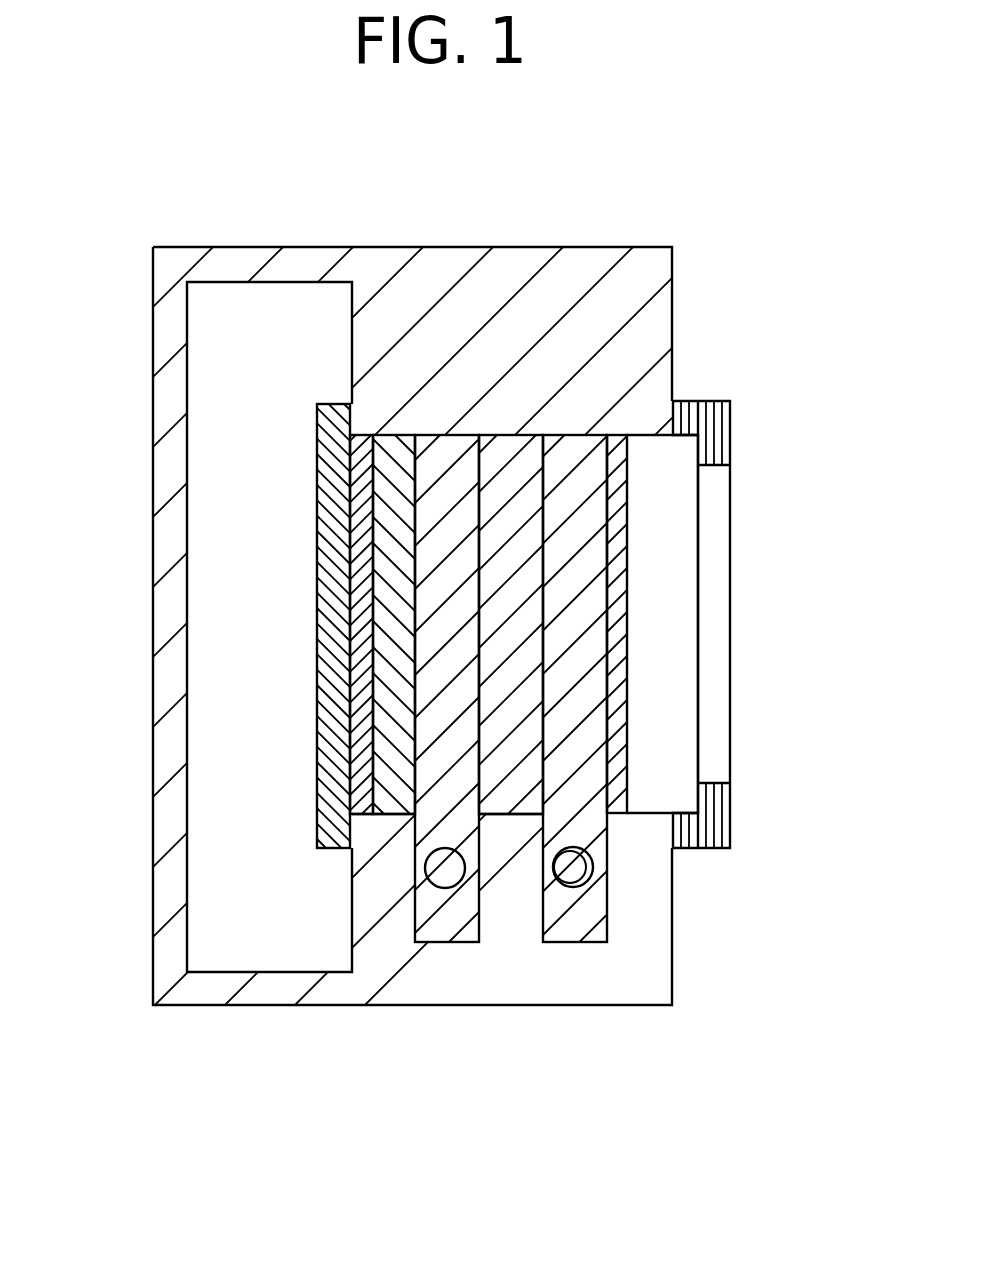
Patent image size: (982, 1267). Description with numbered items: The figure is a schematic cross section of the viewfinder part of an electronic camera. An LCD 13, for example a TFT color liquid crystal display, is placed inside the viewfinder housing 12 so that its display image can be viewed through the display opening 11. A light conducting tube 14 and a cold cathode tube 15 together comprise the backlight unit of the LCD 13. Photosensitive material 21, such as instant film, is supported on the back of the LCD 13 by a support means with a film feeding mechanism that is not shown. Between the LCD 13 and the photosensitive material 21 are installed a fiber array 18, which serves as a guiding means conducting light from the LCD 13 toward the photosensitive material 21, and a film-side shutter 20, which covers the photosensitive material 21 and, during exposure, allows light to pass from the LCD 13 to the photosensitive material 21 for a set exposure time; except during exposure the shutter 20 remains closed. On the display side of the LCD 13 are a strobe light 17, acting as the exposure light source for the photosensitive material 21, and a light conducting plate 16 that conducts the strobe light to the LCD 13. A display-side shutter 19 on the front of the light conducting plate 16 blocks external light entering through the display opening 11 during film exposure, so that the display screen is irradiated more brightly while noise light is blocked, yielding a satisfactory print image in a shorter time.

The display opening 11 is at (732, 623).
The viewfinder housing 12 is at (475, 300).
The LCD 13 is at (507, 800).
The light conducting tube 14 is at (443, 783).
The cold cathode tube 15 is at (438, 872).
The light conducting plate 16 is at (590, 710).
The strobe light 17 is at (578, 872).
The fiber array 18 is at (393, 688).
The display-side shutter 19 is at (625, 515).
The film-side shutter 20 is at (355, 577).
The photosensitive material 21 is at (322, 493).